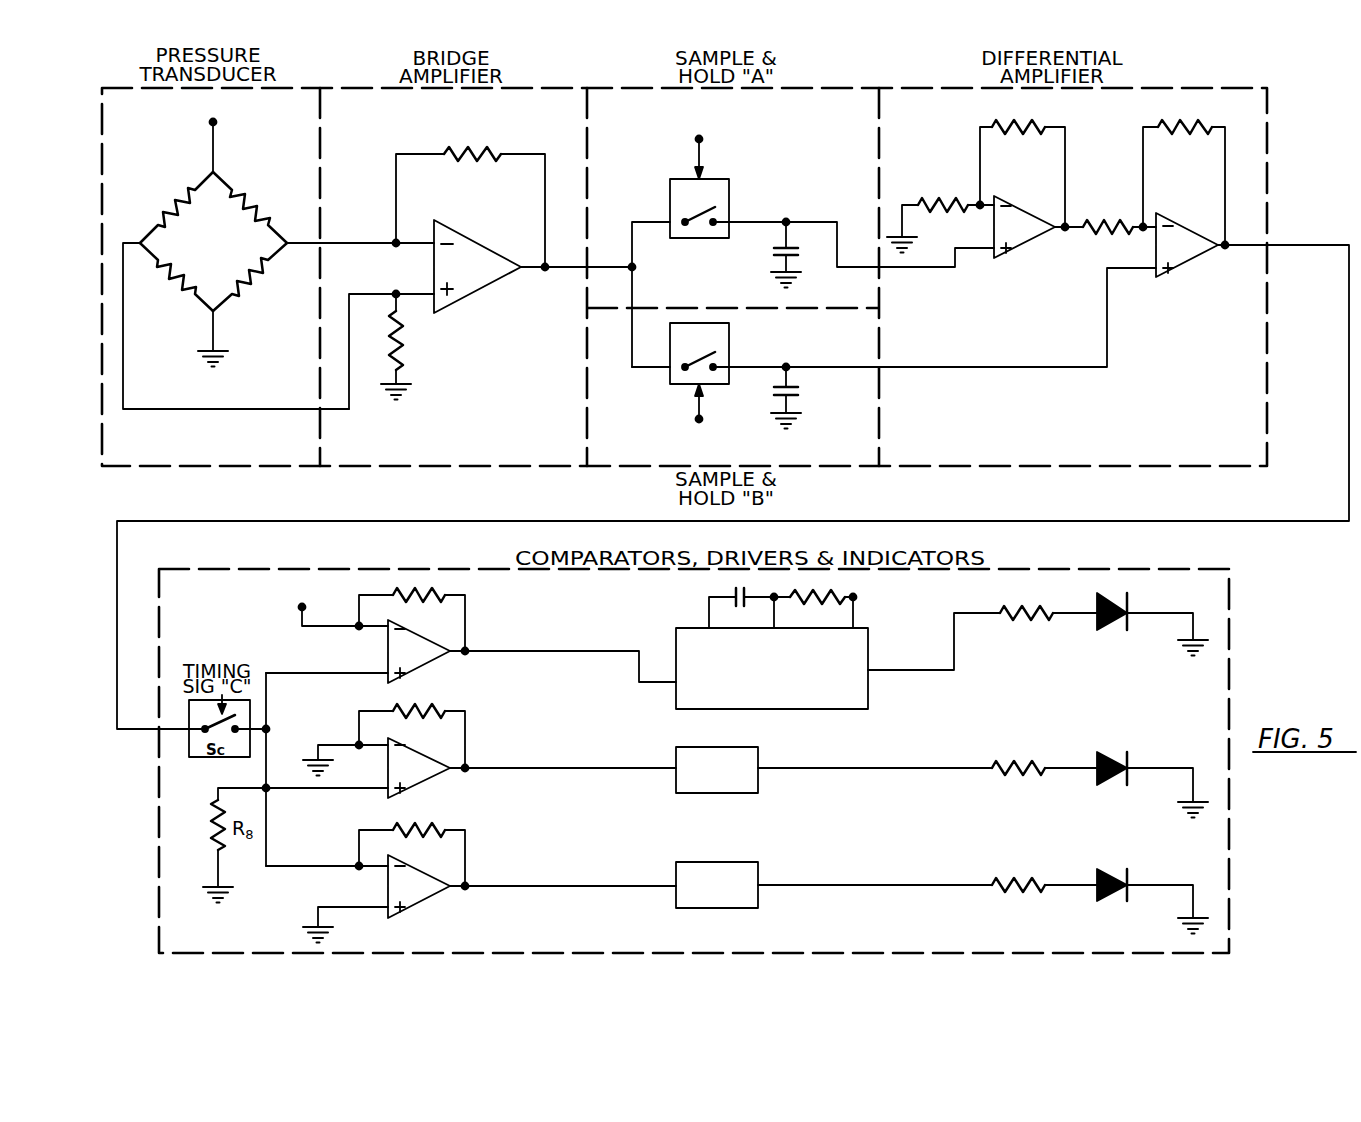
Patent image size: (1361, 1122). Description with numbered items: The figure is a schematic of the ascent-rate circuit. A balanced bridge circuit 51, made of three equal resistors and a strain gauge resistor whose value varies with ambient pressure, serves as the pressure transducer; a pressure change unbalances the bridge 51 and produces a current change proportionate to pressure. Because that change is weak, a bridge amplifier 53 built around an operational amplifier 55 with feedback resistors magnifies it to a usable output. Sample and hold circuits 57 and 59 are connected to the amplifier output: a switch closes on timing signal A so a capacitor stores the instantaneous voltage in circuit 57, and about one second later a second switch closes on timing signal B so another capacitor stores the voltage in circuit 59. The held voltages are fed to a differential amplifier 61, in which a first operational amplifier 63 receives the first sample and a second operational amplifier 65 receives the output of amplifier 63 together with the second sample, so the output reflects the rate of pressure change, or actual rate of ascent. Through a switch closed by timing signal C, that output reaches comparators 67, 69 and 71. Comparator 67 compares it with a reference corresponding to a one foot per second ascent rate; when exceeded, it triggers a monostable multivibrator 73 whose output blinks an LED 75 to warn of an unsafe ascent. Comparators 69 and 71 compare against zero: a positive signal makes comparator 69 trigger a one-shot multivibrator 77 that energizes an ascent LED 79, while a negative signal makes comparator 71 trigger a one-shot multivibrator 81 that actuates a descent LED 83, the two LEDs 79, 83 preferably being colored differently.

The balanced bridge circuit 51 is at (284, 134).
The bridge amplifier 53 is at (490, 253).
The operational amplifier 55 is at (474, 281).
The sample and hold circuit 57 is at (850, 123).
The sample and hold circuit 59 is at (853, 415).
The differential amplifier 61 is at (733, 410).
The first operational amplifier 63 is at (1022, 206).
The second operational amplifier 65 is at (1183, 253).
The comparator 67 is at (388, 655).
The comparator 69 is at (388, 772).
The comparator 71 is at (414, 896).
The monostable multivibrator 73 is at (858, 697).
The LED 75 is at (1113, 601).
The one-shot monostable multivibrator 77 is at (683, 787).
The LED 79 is at (1113, 755).
The one-shot monostable multivibrator 81 is at (762, 862).
The LED 83 is at (1115, 870).